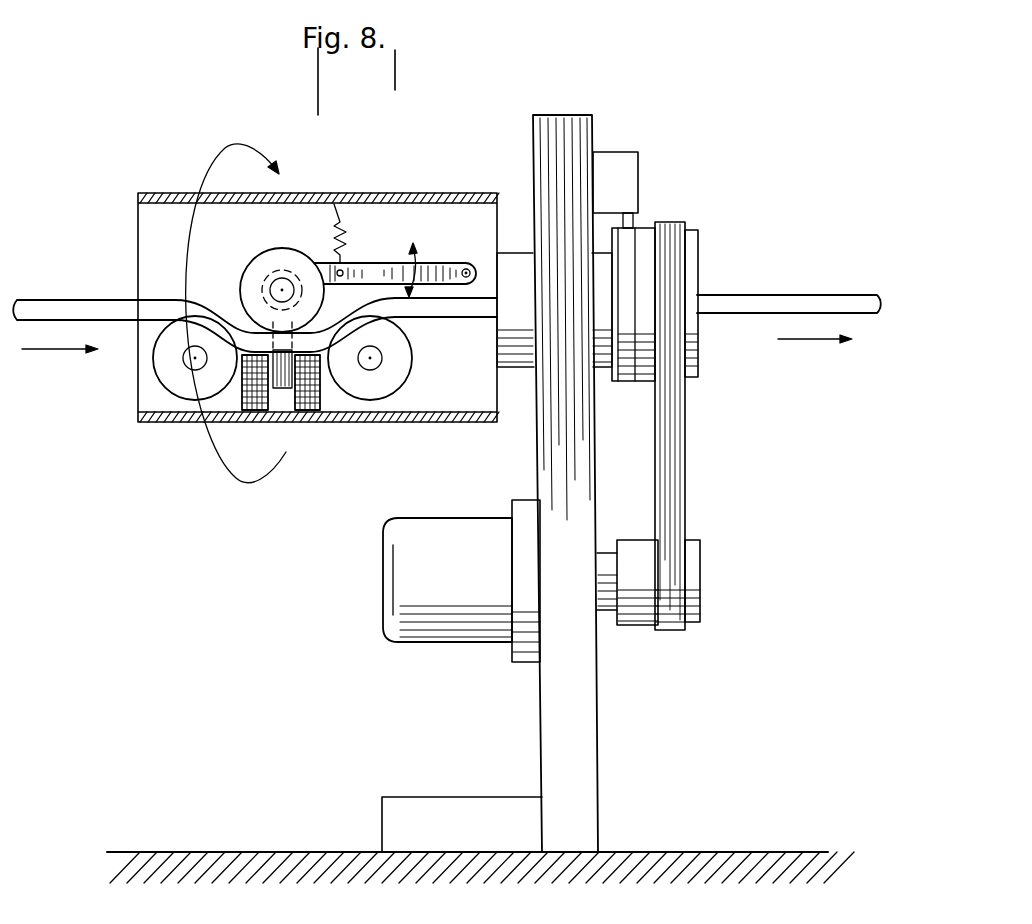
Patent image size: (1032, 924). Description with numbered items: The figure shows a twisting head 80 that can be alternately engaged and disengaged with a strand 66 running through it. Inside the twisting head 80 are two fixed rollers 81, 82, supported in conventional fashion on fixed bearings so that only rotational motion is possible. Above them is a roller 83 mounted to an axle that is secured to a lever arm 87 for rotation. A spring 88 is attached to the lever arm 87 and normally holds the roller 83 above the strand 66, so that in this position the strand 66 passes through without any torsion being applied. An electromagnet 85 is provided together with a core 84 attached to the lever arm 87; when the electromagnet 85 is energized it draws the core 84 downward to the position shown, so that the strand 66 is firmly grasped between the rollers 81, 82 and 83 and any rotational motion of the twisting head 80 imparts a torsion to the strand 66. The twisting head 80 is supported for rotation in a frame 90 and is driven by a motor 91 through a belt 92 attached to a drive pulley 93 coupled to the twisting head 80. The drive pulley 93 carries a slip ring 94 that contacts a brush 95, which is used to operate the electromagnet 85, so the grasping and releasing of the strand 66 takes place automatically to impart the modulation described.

The strand 66 is at (67, 310).
The twisting head 80 is at (420, 192).
The fixed roller 81 is at (165, 378).
The fixed roller 82 is at (383, 388).
The roller 83 is at (285, 249).
The core 84 is at (284, 388).
The electromagnet 85 is at (318, 394).
The lever arm 87 is at (464, 262).
The spring 88 is at (345, 221).
The frame 90 is at (565, 122).
The motor 91 is at (432, 637).
The belt 92 is at (673, 492).
The drive pulley 93 is at (690, 254).
The slip ring 94 is at (632, 237).
The brush 95 is at (630, 170).